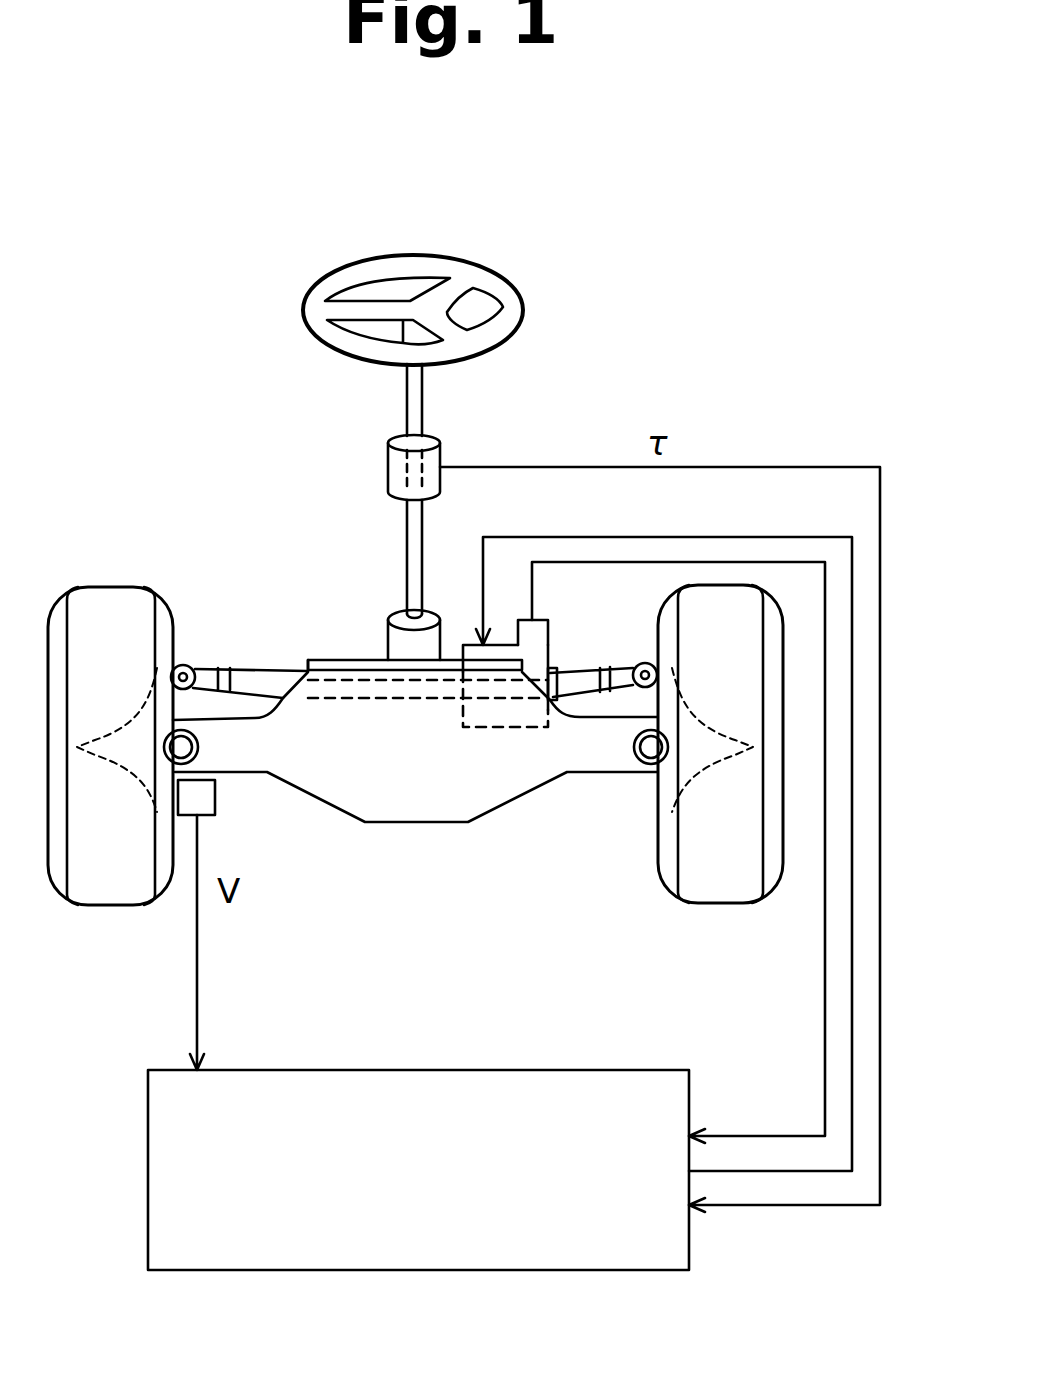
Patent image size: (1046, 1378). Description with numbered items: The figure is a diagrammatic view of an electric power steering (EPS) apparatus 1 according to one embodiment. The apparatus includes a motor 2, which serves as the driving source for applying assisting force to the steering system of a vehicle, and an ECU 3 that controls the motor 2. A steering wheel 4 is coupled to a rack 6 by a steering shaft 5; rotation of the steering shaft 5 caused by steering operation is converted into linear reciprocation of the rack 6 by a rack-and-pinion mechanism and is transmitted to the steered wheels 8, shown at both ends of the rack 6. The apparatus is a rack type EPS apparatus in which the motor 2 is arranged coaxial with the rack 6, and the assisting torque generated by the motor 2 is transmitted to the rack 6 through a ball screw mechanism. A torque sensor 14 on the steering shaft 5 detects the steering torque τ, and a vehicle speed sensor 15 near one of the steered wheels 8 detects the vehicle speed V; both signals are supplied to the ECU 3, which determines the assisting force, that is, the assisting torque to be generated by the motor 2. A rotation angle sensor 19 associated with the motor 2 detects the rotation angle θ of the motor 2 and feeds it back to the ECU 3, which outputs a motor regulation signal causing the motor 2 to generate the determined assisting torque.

The electric power steering (EPS) apparatus 1 is at (728, 223).
The motor 2 is at (495, 727).
The ECU 3 is at (518, 1070).
The steering wheel 4 is at (514, 289).
The steering shaft 5 is at (407, 558).
The rack 6 is at (355, 700).
The steered wheels 8 is at (108, 905).
The torque sensor 14 is at (388, 467).
The vehicle speed sensor 15 is at (215, 795).
The rotation angle sensor 19 is at (548, 618).